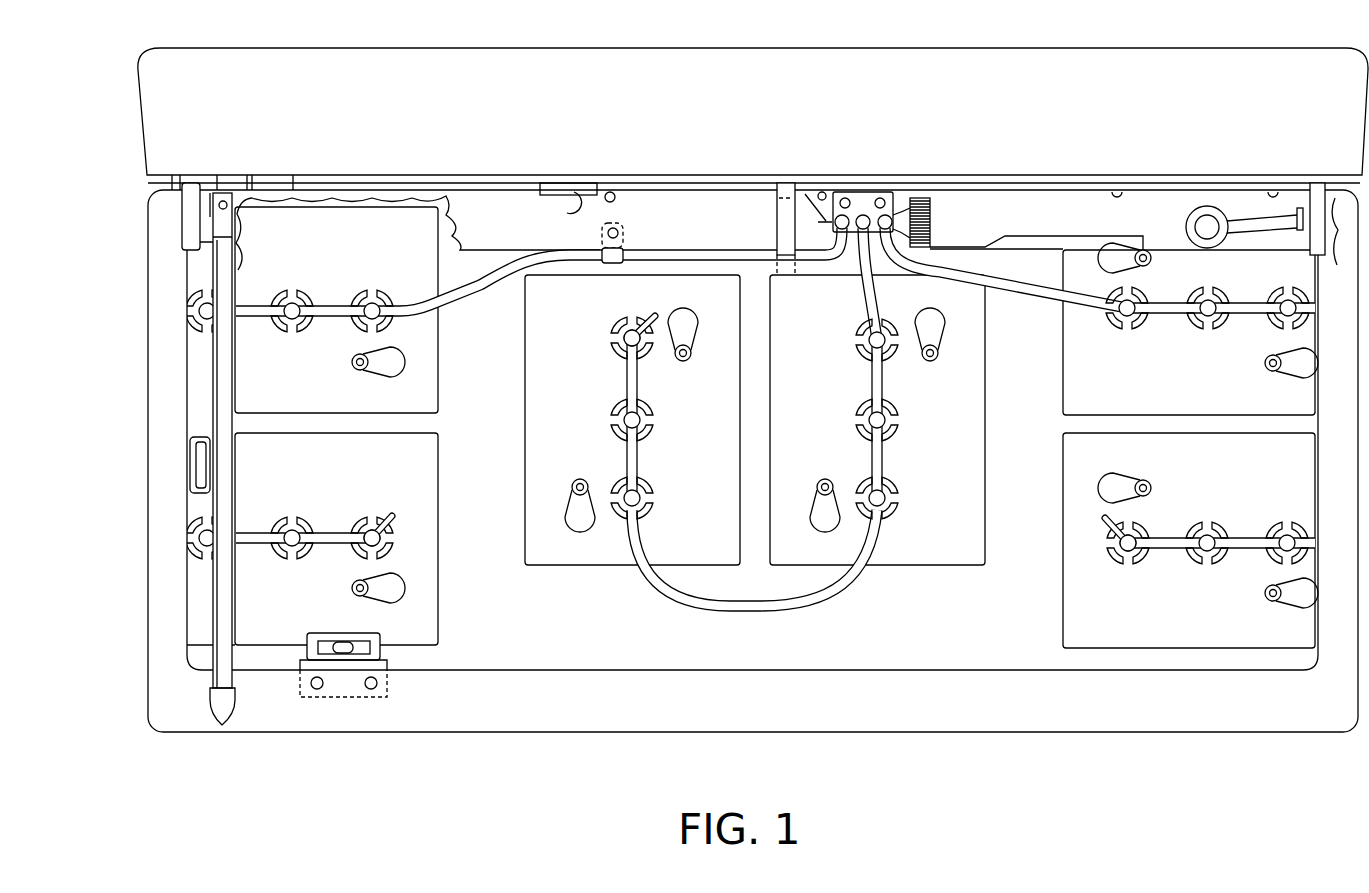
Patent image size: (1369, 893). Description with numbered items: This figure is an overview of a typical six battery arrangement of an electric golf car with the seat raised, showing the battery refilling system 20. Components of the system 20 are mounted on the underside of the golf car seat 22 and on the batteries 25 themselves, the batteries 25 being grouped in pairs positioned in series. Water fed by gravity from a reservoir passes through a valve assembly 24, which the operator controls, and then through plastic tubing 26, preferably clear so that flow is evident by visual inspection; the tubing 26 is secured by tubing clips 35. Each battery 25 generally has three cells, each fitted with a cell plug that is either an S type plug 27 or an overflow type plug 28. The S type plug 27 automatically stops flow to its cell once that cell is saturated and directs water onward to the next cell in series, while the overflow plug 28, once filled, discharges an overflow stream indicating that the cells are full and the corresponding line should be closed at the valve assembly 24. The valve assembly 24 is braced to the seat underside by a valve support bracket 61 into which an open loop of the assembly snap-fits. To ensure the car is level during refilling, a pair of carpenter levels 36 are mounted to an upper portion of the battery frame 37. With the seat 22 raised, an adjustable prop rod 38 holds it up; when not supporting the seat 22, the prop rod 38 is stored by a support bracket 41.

The refilling system 20 is at (729, 391).
The golf car seat 22 is at (845, 47).
The valve assembly 24 is at (858, 215).
The batteries 25 is at (440, 360).
The plastic tubing 26 is at (742, 605).
The S type cell plug 27 is at (372, 291).
The overflow type cell plug 28 is at (608, 338).
The tubing clips 35 is at (616, 227).
The carpenter levels 36 is at (195, 462).
The battery frame 37 is at (1140, 733).
The adjustable prop rod 38 is at (211, 685).
The support bracket 41 is at (552, 192).
The valve support bracket 61 is at (821, 191).